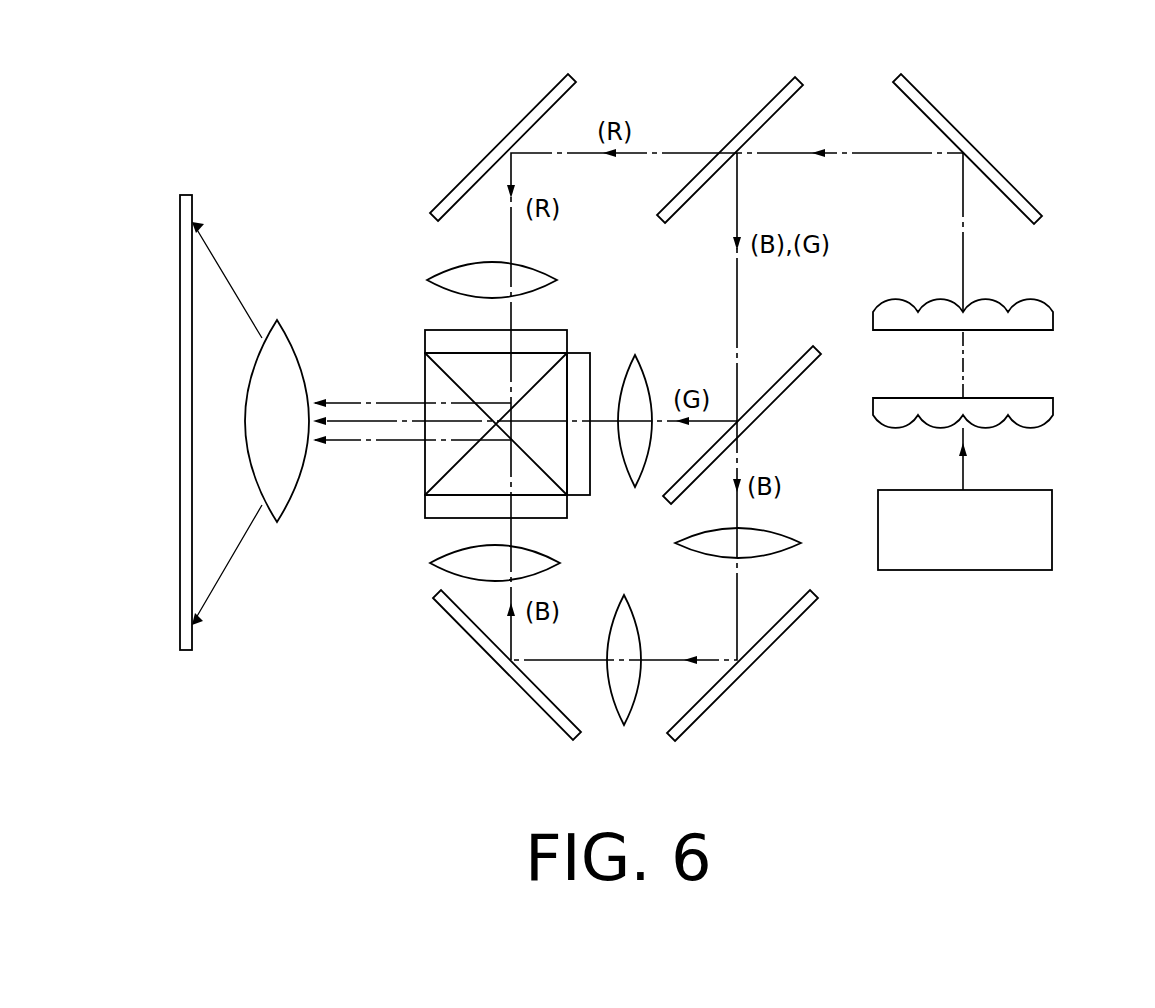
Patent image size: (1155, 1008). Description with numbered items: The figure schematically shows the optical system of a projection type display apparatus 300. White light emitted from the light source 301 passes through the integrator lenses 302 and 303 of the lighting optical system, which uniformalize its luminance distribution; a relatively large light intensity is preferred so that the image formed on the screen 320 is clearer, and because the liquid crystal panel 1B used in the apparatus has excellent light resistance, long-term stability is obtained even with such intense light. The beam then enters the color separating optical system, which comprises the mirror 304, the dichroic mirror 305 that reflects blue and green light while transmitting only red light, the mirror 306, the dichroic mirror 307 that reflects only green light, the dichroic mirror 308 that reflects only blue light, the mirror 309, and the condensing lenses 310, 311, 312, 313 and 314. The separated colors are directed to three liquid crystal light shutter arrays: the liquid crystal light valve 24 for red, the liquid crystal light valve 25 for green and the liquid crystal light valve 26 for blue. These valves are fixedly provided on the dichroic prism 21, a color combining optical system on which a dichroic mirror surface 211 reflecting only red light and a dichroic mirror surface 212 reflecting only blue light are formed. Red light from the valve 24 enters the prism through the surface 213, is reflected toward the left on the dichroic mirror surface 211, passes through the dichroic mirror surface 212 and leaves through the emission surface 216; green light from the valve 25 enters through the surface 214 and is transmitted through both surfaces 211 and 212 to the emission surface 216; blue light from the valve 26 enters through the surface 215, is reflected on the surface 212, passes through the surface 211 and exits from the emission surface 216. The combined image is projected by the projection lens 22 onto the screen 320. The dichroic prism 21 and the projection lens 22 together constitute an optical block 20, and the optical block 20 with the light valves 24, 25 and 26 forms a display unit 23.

The liquid crystal panel 1B is at (458, 342).
The optical block 20 is at (313, 537).
The dichroic prism 21 is at (420, 484).
The projection lens 22 is at (282, 350).
The display unit 23 is at (495, 384).
The liquid crystal light valve for red 24 is at (430, 337).
The liquid crystal light valve for green 25 is at (581, 375).
The liquid crystal light valve for blue 26 is at (560, 503).
The dichroic mirror surface 211 is at (423, 458).
The dichroic mirror surface 212 is at (440, 375).
The surface 213 is at (453, 357).
The surface 214 is at (563, 468).
The surface 215 is at (455, 492).
The emission surface 216 is at (427, 397).
The projection type display apparatus 300 is at (1063, 140).
The light source 301 is at (1052, 545).
The integrator lens 302 is at (1040, 413).
The integrator lens 303 is at (1037, 320).
The mirror 304 is at (942, 122).
The dichroic mirror 305 is at (752, 122).
The mirror 306 is at (528, 113).
The dichroic mirror 307 is at (782, 380).
The dichroic mirror 308 is at (787, 623).
The mirror 309 is at (482, 645).
The condensing lens 310 is at (455, 277).
The condensing lens 311 is at (640, 387).
The condensing lens 312 is at (768, 537).
The condensing lens 313 is at (627, 703).
The condensing lens 314 is at (452, 565).
The screen 320 is at (190, 652).